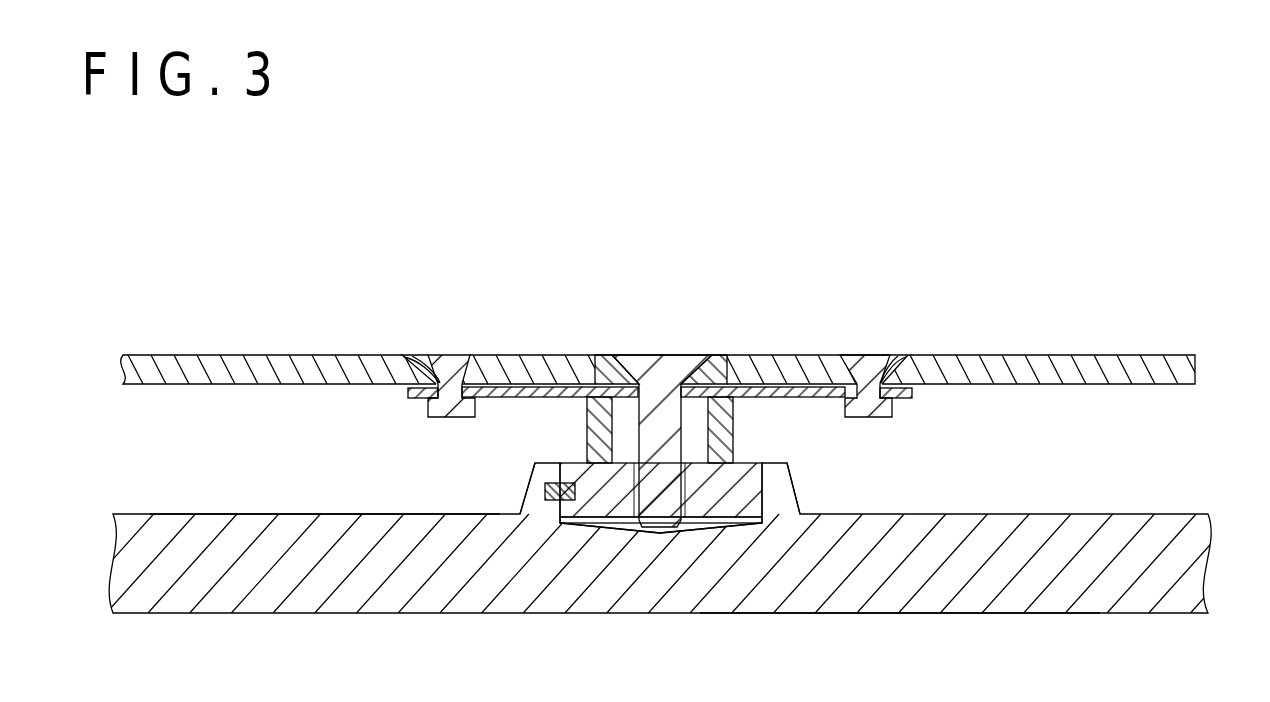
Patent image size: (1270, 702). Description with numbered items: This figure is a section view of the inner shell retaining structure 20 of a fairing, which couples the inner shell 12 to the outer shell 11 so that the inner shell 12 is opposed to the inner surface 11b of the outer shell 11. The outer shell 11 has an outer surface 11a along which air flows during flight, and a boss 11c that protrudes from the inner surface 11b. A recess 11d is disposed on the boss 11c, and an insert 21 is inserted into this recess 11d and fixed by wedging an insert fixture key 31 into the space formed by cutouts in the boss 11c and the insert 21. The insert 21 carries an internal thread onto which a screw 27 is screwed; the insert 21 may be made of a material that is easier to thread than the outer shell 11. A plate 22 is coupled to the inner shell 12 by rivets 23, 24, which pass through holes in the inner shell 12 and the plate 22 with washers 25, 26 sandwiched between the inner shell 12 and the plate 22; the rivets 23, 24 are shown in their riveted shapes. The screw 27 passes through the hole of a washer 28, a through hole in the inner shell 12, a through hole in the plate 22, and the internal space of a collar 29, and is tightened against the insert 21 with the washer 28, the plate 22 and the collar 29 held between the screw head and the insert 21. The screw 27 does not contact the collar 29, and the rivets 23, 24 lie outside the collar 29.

The outer shell 11 is at (1208, 524).
The outer surface 11a is at (292, 614).
The inner surface 11b is at (228, 513).
The boss 11c is at (535, 463).
The recess 11d is at (676, 535).
The inner shell 12 is at (1195, 370).
The inner shell retaining structure 20 is at (395, 468).
The insert 21 is at (747, 463).
The plate 22 is at (912, 396).
The rivet 23 is at (453, 357).
The rivet 24 is at (872, 360).
The washer 25 is at (408, 364).
The washer 26 is at (898, 370).
The screw 27 is at (662, 358).
The washer 28 is at (721, 358).
The collar 29 is at (733, 415).
The insert fixture key 31 is at (545, 490).